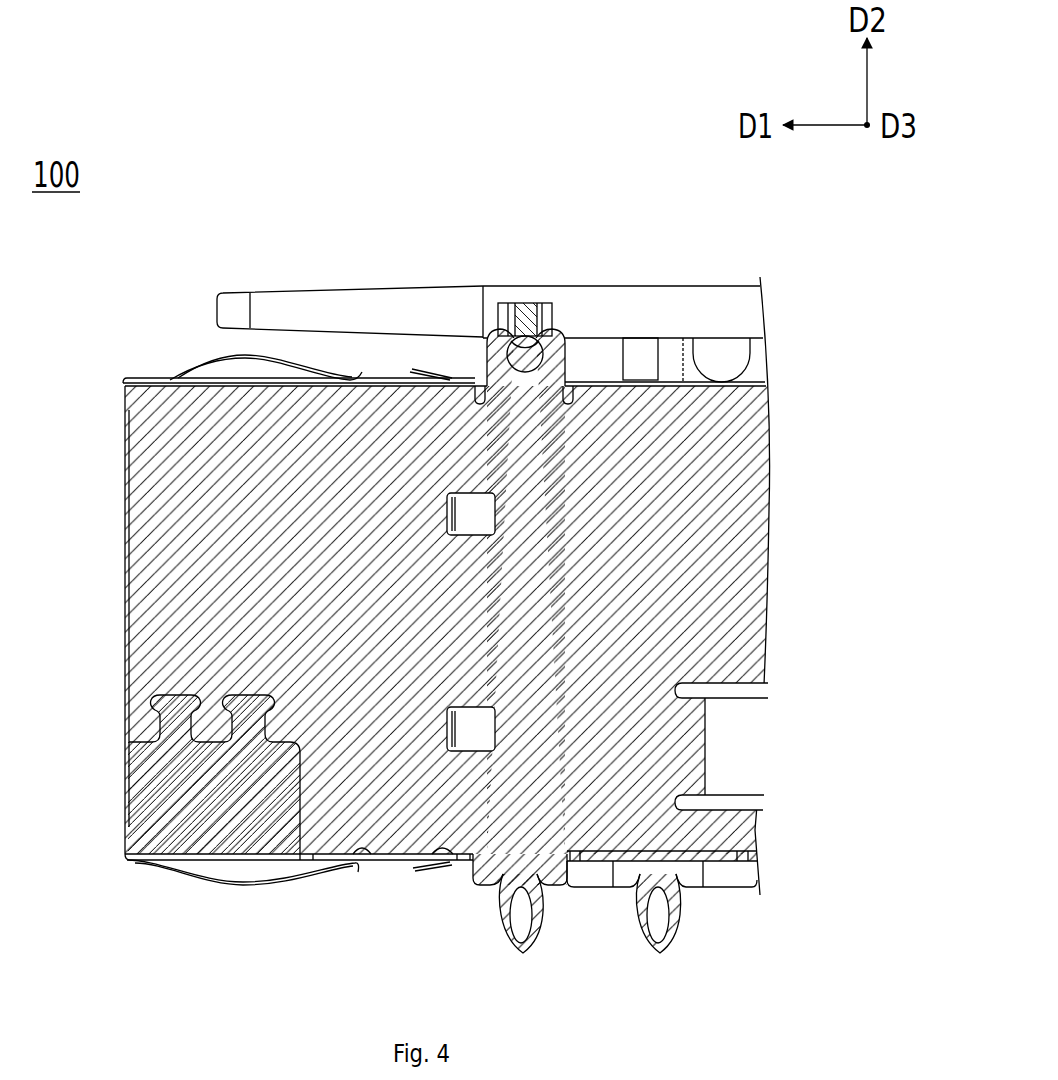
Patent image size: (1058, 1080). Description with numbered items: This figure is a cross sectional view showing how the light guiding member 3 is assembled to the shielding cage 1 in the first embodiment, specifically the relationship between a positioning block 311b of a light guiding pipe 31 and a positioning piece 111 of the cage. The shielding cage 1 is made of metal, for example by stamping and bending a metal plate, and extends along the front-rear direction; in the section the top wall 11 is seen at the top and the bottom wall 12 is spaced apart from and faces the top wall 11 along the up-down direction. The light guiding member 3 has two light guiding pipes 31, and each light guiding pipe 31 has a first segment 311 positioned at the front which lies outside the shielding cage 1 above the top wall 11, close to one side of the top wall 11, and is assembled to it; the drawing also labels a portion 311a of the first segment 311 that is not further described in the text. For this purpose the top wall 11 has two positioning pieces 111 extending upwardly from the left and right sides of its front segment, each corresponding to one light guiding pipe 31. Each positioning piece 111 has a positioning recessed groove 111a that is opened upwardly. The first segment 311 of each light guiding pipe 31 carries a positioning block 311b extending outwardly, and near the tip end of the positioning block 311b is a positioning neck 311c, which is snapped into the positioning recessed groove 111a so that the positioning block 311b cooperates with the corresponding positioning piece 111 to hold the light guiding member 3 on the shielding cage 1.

The shielding cage 1 is at (150, 870).
The top wall 11 is at (208, 381).
The positioning piece 111 is at (482, 361).
The positioning recessed groove 111a is at (544, 350).
The bottom wall 12 is at (358, 862).
The light guiding member 3 is at (475, 283).
The light guiding pipe 31 is at (681, 280).
The first segment 311 is at (728, 298).
The arm 311a is at (214, 311).
The positioning block 311b is at (493, 318).
The positioning neck 311c is at (525, 352).